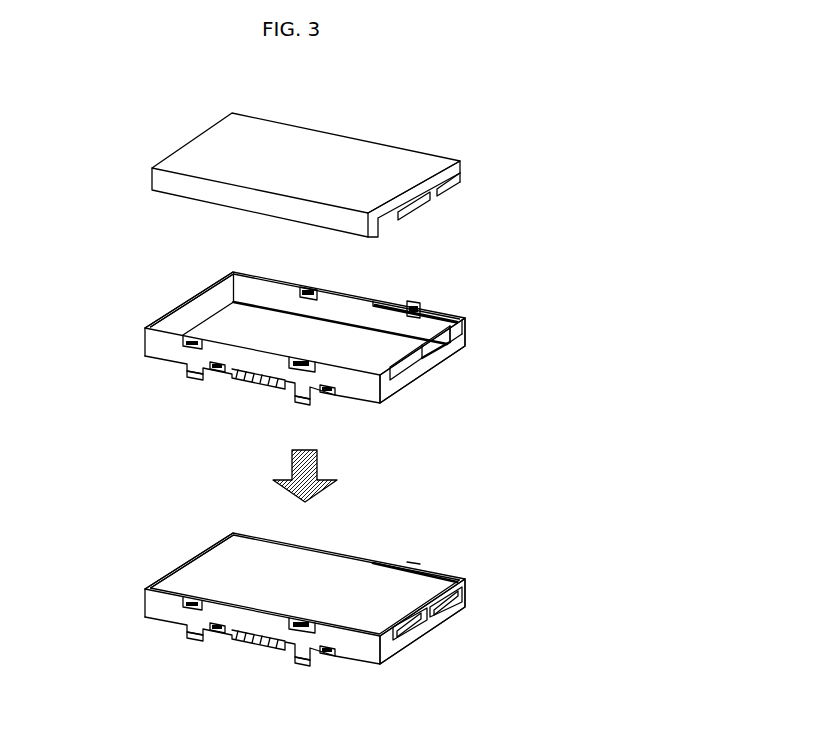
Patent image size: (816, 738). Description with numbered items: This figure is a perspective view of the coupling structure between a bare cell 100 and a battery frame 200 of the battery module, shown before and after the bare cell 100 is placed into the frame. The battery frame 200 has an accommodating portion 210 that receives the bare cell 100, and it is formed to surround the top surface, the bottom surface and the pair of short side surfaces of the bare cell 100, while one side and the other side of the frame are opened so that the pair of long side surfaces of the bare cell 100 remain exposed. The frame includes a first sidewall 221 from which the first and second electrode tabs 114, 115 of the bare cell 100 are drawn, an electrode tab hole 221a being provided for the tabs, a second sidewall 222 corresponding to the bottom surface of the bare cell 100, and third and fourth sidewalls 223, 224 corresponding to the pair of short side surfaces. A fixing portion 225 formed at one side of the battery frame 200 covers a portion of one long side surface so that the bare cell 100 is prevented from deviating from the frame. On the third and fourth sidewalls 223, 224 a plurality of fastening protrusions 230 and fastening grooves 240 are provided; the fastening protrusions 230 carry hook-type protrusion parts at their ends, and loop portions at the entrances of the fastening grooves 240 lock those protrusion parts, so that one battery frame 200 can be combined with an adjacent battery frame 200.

The bare cell 100 is at (346, 134).
The first electrode tab 114 is at (422, 208).
The second electrode tab 115 is at (452, 190).
The battery frame 200 is at (125, 320).
The accommodating portion 210 is at (336, 350).
The first sidewall 221 is at (420, 373).
The electrode tab hole 221a is at (462, 350).
The second sidewall 222 is at (217, 297).
The third sidewall 223 is at (362, 397).
The fourth sidewall 224 is at (443, 325).
The fixing portion 225 is at (197, 332).
The fastening protrusion 230 is at (192, 375).
The fastening groove 240 is at (410, 300).